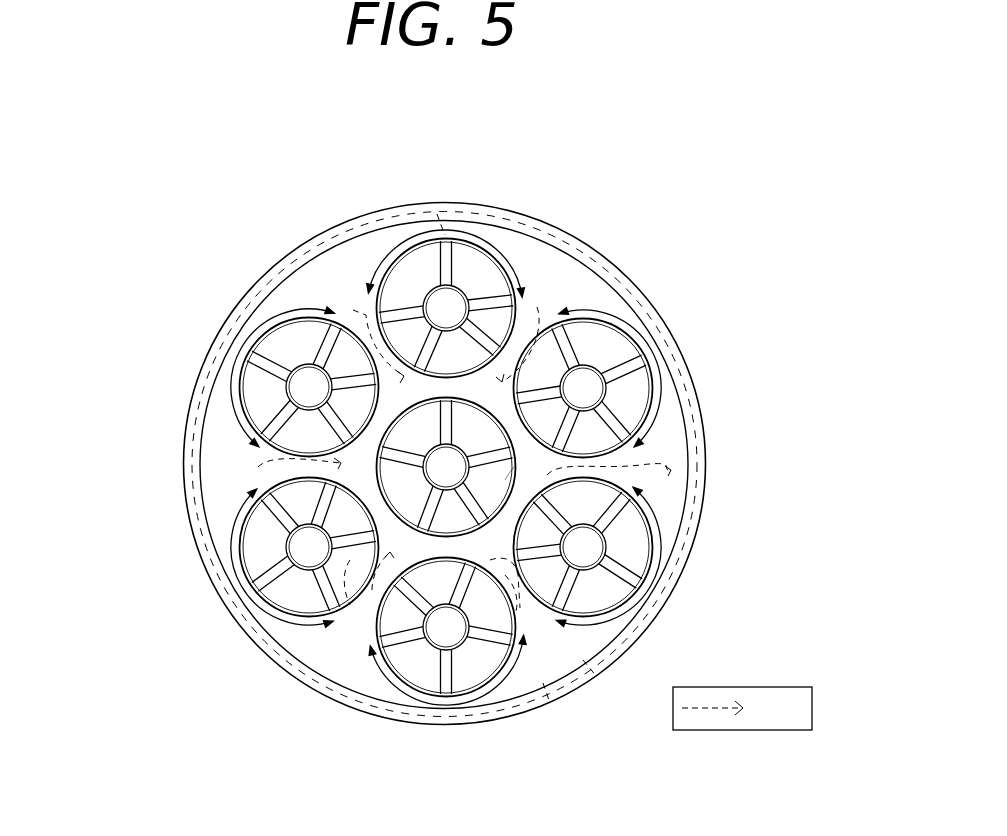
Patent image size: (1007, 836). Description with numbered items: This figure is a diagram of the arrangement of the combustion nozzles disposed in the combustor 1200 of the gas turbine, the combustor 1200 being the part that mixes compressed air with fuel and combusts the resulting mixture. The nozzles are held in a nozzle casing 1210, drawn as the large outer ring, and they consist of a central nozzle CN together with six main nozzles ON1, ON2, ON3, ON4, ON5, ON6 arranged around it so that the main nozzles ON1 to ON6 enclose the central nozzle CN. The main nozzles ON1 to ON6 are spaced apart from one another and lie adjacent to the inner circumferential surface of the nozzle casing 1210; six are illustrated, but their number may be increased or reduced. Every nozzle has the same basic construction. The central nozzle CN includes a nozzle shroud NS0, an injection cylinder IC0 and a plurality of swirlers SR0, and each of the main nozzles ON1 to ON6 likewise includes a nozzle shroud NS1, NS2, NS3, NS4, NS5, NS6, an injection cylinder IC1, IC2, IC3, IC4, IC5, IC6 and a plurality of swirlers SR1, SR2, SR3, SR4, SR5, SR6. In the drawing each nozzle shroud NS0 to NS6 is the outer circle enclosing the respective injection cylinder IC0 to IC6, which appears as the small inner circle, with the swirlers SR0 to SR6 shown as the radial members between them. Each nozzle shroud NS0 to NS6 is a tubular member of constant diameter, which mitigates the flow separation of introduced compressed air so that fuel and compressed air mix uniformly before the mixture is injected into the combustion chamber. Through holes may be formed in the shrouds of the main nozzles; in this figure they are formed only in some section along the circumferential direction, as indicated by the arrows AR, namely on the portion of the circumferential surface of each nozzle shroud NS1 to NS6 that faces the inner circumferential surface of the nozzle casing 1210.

The combustor 1200 is at (240, 95).
The nozzle casing 1210 is at (532, 228).
The central nozzle CN is at (595, 454).
The main nozzle ON1 is at (422, 244).
The main nozzle ON2 is at (230, 382).
The main nozzle ON3 is at (269, 608).
The main nozzle ON4 is at (498, 672).
The main nozzle ON5 is at (663, 552).
The main nozzle ON6 is at (621, 327).
The injection cylinder IC0 is at (464, 455).
The injection cylinder IC1 is at (426, 295).
The injection cylinder IC2 is at (286, 390).
The injection cylinder IC3 is at (306, 570).
The injection cylinder IC4 is at (467, 637).
The injection cylinder IC5 is at (606, 548).
The injection cylinder IC6 is at (598, 370).
The swirlers SR0 is at (510, 475).
The swirlers SR1 is at (368, 290).
The swirlers SR2 is at (258, 447).
The swirlers SR3 is at (333, 622).
The swirlers SR4 is at (524, 640).
The swirlers SR5 is at (635, 488).
The swirlers SR6 is at (561, 313).
The nozzle shroud NS0 is at (490, 452).
The nozzle shroud NS1 is at (425, 240).
The nozzle shroud NS2 is at (264, 364).
The nozzle shroud NS3 is at (268, 578).
The nozzle shroud NS4 is at (452, 678).
The nozzle shroud NS5 is at (622, 573).
The nozzle shroud NS6 is at (608, 372).
The air flow direction AR is at (502, 471).